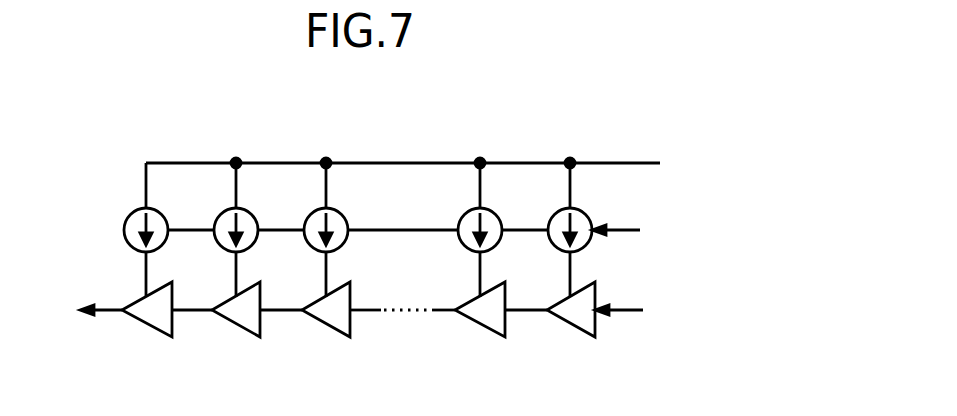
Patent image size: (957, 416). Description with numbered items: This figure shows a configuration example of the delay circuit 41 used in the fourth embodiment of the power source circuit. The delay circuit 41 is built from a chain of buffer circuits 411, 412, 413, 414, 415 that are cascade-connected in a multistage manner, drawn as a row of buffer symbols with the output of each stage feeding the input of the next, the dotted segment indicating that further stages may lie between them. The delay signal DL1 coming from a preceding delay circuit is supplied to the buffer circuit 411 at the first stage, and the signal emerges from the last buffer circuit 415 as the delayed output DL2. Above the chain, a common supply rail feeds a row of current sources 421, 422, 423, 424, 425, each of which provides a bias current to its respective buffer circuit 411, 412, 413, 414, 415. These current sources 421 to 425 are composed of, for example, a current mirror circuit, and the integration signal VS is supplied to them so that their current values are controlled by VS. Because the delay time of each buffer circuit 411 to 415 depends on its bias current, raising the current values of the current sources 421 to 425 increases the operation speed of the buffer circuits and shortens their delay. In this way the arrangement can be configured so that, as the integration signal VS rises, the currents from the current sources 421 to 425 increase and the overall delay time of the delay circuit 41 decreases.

The delay circuit 41 is at (613, 128).
The buffer circuit 411 is at (571, 328).
The buffer circuit 412 is at (481, 328).
The buffer circuit 413 is at (327, 328).
The buffer circuit 414 is at (237, 328).
The buffer circuit 415 is at (147, 328).
The current source 421 is at (584, 210).
The current source 422 is at (494, 210).
The current source 423 is at (340, 210).
The current source 424 is at (250, 210).
The current source 425 is at (160, 210).